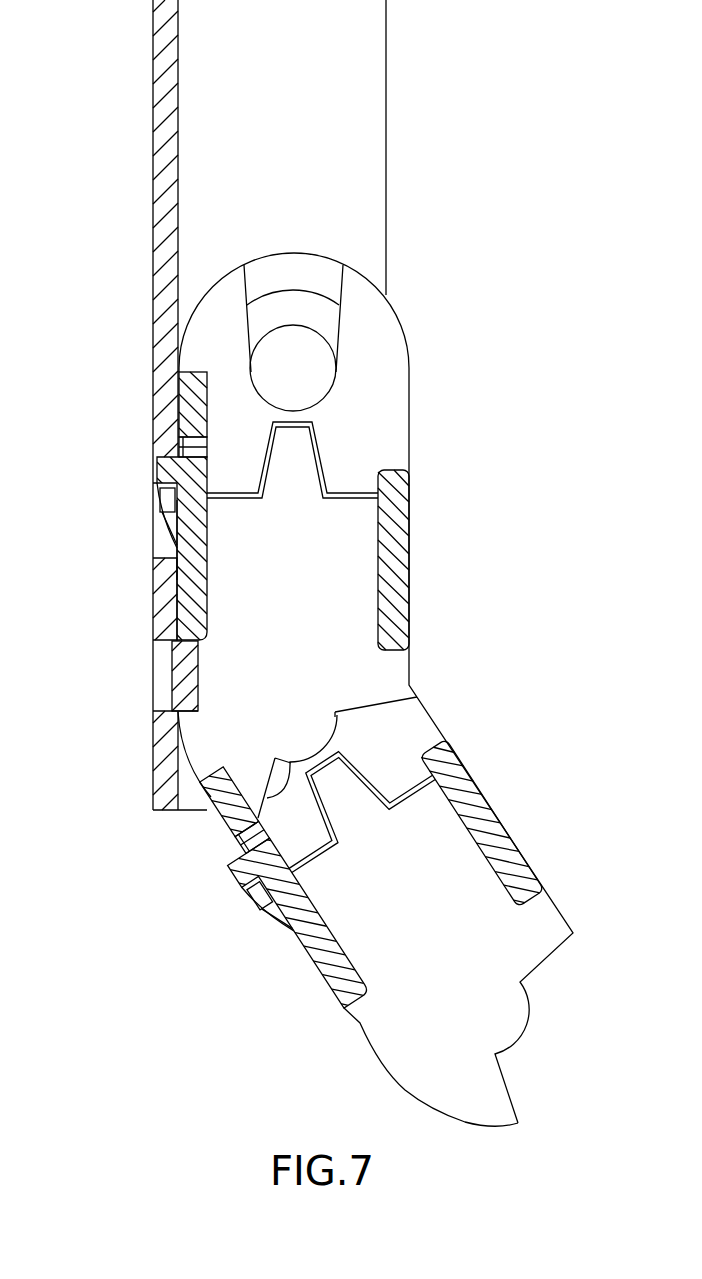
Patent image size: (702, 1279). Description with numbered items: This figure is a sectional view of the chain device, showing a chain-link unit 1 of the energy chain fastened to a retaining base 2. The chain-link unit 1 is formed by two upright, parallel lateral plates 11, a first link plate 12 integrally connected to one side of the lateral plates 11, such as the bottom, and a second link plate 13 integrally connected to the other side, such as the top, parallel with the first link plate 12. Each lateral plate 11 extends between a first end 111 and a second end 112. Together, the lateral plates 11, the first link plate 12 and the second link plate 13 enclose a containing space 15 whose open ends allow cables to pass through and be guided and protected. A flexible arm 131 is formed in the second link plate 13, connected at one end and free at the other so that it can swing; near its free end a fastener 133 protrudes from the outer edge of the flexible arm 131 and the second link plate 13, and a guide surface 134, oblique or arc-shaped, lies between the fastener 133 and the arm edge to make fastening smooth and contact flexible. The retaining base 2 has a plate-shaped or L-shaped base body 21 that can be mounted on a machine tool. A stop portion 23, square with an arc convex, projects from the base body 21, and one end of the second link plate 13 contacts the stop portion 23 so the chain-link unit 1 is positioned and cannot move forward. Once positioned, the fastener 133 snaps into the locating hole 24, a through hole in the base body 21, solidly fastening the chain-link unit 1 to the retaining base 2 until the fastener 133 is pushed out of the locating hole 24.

The chain-link unit 1 is at (424, 495).
The lateral plate 11 is at (422, 410).
The first end 111 is at (298, 758).
The second end 112 is at (301, 253).
The first link plate 12 is at (422, 552).
The second link plate 13 is at (220, 595).
The flexible arm 131 is at (190, 542).
The fastener 133 is at (160, 473).
The guide surface 134 is at (160, 503).
The containing space 15 is at (311, 590).
The retaining base 2 is at (144, 101).
The base body 21 is at (172, 178).
The stop portion 23 is at (187, 678).
The locating hole 24 is at (163, 528).